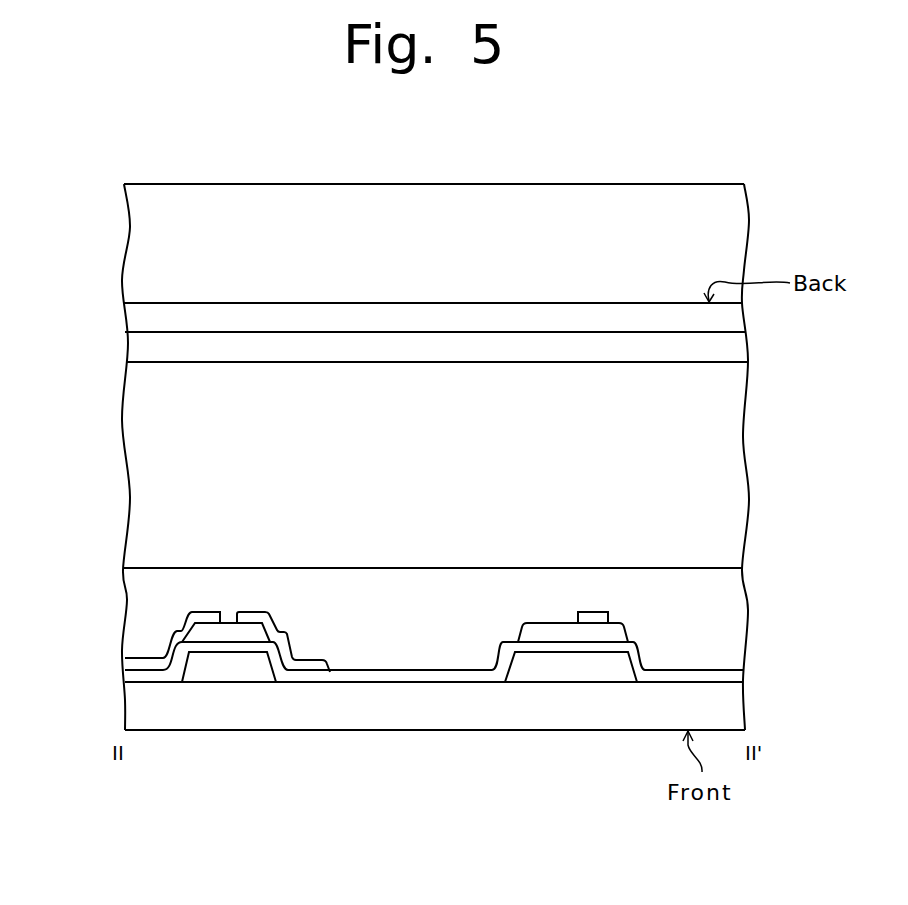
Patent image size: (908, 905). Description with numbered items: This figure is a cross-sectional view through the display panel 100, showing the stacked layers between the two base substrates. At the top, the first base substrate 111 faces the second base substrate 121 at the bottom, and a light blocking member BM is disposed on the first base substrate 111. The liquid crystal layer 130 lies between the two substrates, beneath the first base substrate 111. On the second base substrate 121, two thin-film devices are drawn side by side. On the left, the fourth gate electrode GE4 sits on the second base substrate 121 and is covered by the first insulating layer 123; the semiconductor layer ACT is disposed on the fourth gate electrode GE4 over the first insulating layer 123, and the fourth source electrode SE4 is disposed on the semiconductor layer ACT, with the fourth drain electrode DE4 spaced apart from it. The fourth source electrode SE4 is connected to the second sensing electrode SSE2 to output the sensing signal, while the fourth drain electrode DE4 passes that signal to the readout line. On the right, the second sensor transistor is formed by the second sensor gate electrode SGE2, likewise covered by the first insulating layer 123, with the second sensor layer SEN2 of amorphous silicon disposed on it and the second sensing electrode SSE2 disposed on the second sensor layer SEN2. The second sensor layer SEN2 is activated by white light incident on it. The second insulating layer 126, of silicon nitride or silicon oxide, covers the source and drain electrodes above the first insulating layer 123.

The display panel 100 is at (837, 303).
The first base substrate 111 is at (737, 317).
The light blocking member BM is at (737, 347).
The liquid crystal layer 130 is at (736, 487).
The second insulating layer 126 is at (738, 624).
The first insulating layer 123 is at (738, 676).
The second base substrate 121 is at (738, 705).
The fourth gate electrode GE4 is at (250, 668).
The semiconductor layer ACT is at (212, 630).
The fourth source electrode SE4 is at (148, 664).
The fourth drain electrode DE4 is at (311, 667).
The second sensor gate electrode SGE2 is at (535, 668).
The second sensor layer SEN2 is at (527, 632).
The second sensing electrode SSE2 is at (593, 617).